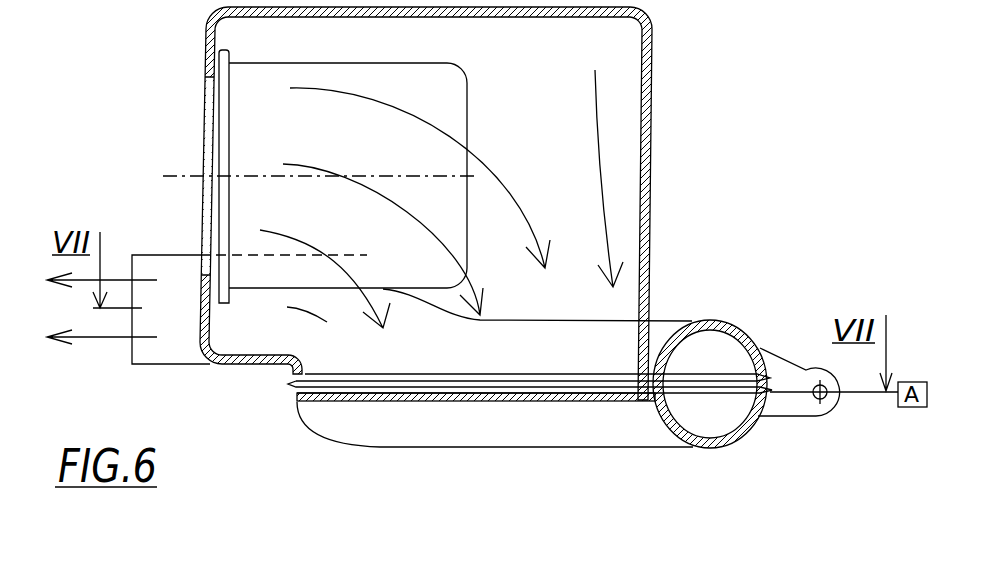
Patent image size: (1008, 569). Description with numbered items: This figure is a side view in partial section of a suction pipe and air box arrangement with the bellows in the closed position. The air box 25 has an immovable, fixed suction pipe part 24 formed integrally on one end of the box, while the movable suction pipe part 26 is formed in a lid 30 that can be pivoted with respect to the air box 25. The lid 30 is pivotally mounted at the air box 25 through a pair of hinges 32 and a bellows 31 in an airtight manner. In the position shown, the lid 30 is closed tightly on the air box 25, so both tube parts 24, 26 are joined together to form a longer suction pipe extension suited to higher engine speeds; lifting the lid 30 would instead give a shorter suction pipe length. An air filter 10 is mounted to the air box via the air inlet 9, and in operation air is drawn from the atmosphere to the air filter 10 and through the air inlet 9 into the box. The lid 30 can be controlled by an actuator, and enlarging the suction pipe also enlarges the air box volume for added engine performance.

The air inlet 9 is at (203, 236).
The air filter 10 is at (260, 65).
The fixed suction pipe part 24 is at (615, 318).
The air box 25 is at (652, 157).
The movable suction pipe part 26 is at (498, 430).
The lid 30 is at (600, 447).
The bellows 31 is at (295, 381).
The hinges 32 is at (834, 417).